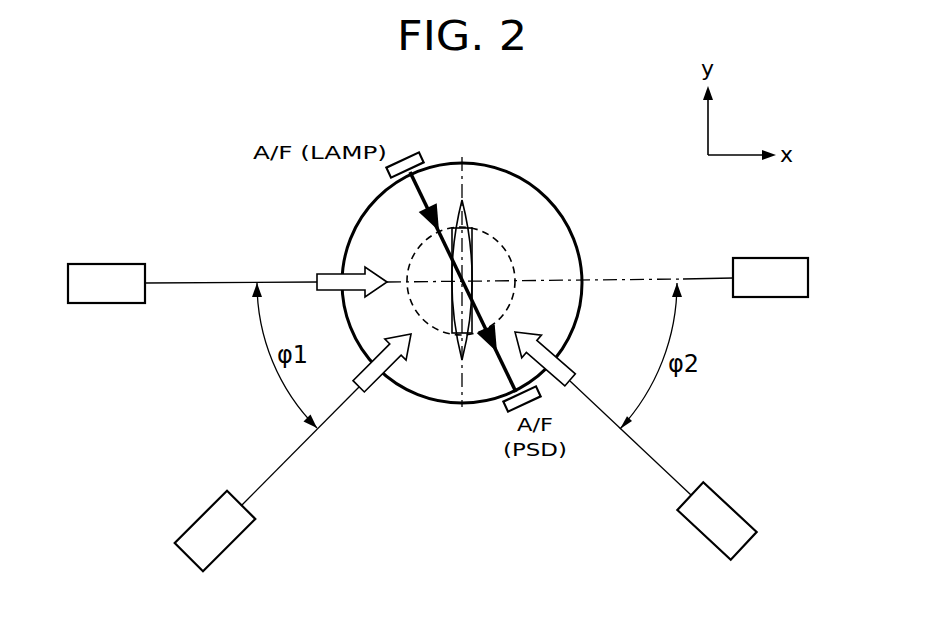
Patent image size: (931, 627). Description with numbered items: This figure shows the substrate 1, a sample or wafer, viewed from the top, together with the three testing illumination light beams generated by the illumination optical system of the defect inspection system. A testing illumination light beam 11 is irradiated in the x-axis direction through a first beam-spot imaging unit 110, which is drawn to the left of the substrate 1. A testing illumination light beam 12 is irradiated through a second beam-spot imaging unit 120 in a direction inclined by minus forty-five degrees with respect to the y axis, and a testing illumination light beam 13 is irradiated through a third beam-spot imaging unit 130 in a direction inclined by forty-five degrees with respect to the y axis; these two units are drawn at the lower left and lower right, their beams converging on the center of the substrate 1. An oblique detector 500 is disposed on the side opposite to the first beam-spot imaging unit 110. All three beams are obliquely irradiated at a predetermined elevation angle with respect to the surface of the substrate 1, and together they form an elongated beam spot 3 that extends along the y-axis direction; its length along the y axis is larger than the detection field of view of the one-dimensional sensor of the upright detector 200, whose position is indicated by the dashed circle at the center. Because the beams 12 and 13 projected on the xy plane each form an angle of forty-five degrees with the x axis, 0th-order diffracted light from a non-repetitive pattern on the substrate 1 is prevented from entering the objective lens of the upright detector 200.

The substrate 1 is at (450, 164).
The beam spot 3 is at (470, 208).
The upright detector 200 is at (509, 258).
The first beam-spot imaging unit 110 is at (112, 263).
The testing illumination light beam 11 is at (192, 282).
The second beam-spot imaging unit 120 is at (200, 515).
The testing illumination light beam 12 is at (277, 472).
The third beam-spot imaging unit 130 is at (760, 493).
The testing illumination light beam 13 is at (655, 459).
The oblique detector 500 is at (770, 257).